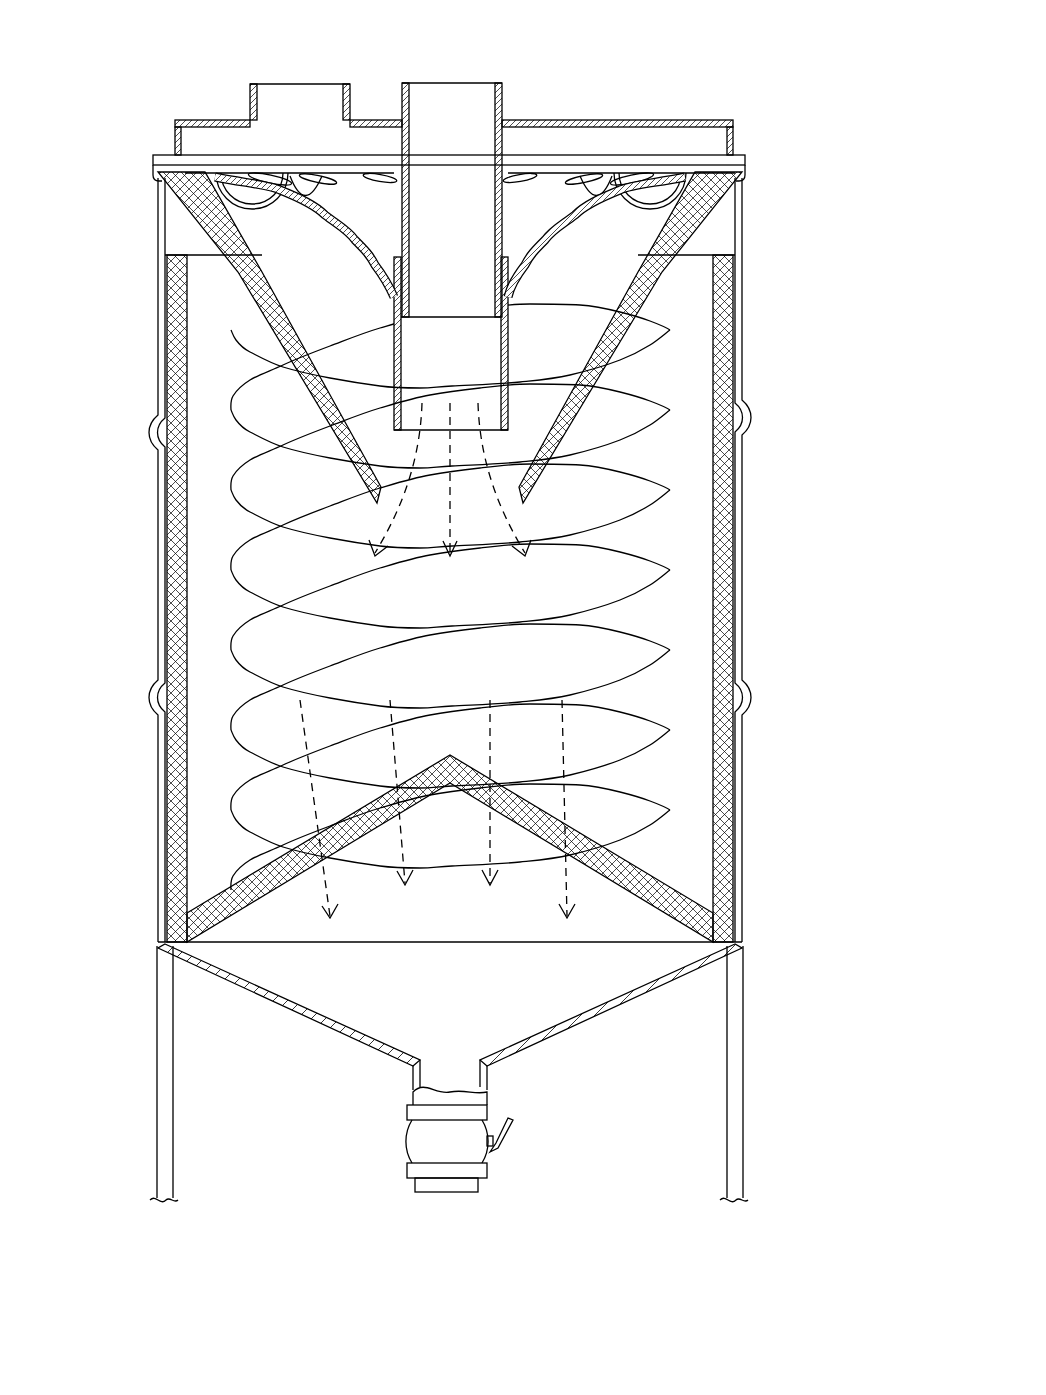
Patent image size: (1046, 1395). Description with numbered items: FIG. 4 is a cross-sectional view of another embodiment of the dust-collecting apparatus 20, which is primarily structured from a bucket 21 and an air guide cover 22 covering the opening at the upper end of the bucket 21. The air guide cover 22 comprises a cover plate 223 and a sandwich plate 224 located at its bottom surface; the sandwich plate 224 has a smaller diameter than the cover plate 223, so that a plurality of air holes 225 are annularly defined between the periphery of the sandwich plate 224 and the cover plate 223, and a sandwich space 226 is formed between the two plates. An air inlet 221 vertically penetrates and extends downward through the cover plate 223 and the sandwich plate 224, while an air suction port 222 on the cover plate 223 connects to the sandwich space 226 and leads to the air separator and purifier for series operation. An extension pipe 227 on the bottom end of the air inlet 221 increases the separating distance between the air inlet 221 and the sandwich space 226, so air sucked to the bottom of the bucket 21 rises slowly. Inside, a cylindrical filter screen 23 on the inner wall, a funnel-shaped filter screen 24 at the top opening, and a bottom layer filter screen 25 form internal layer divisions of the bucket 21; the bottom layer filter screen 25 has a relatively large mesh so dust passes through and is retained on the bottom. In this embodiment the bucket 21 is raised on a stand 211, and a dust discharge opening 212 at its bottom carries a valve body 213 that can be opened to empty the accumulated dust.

The powder collecting device 20 is at (742, 132).
The bucket 21 is at (737, 368).
The stand 211 is at (158, 1052).
The dust discharge opening 212 is at (447, 1192).
The valve body 213 is at (463, 1148).
The air guide cover 22 is at (640, 95).
The air inlet 221 is at (468, 105).
The air suction port 222 is at (302, 105).
The cover plate 223 is at (563, 117).
The sandwich plate 224 is at (560, 252).
The air holes 225 is at (165, 254).
The sandwich space 226 is at (397, 217).
The extension pipe 227 is at (300, 541).
The cylindrical filter screen 23 is at (178, 462).
The funnel-shaped filter screen 24 is at (262, 318).
The bottom layer filter screen 25 is at (215, 893).